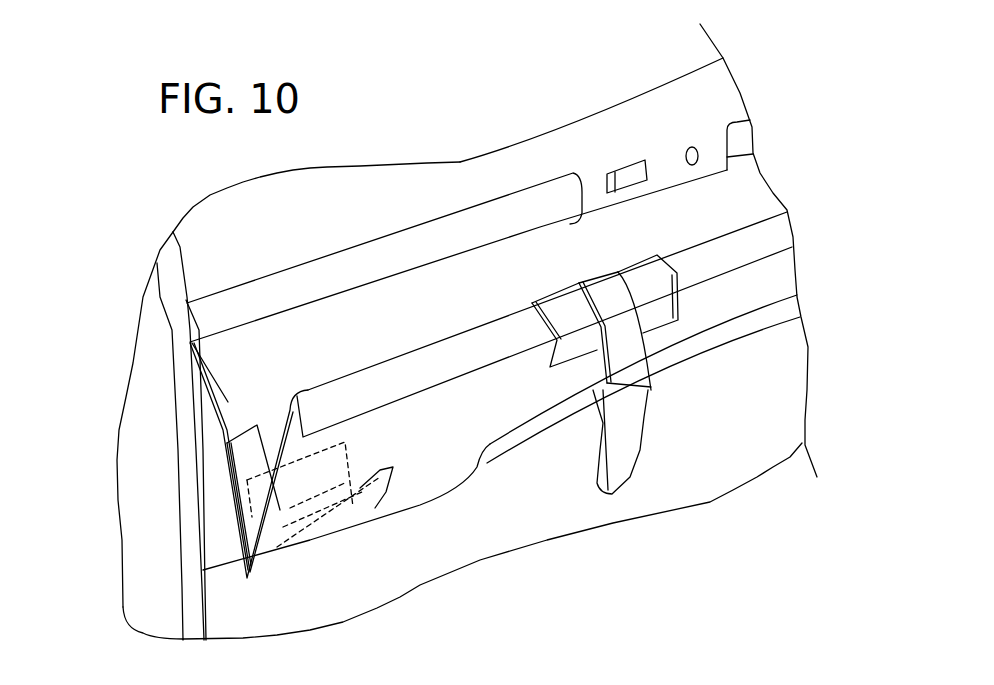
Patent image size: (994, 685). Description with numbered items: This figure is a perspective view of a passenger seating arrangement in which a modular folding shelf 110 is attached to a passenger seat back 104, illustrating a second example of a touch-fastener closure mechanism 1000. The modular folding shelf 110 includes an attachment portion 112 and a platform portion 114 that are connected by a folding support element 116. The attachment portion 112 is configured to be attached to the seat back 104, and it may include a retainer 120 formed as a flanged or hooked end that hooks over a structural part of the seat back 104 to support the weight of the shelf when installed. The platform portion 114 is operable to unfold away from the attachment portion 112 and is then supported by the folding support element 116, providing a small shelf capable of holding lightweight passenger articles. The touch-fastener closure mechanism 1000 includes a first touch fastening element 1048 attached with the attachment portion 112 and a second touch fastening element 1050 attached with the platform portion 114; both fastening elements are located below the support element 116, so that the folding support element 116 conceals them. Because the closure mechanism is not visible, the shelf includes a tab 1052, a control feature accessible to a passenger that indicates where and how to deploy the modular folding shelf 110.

The touch-fastener closure mechanism 1000 is at (495, 331).
The seat back 104 is at (139, 436).
The attachment portion 112 is at (370, 303).
The retainer 120 is at (640, 221).
The folding support element 116 is at (195, 460).
The modular folding shelf 110 is at (458, 448).
The platform portion 114 is at (720, 297).
The tab 1052 is at (618, 353).
The first touch fastening element 1048 is at (216, 494).
The second touch fastening element 1050 is at (407, 515).